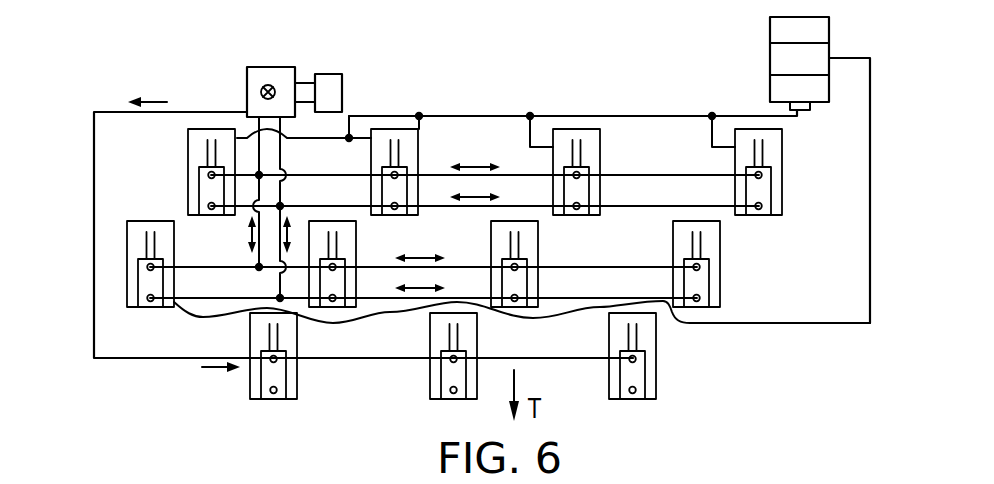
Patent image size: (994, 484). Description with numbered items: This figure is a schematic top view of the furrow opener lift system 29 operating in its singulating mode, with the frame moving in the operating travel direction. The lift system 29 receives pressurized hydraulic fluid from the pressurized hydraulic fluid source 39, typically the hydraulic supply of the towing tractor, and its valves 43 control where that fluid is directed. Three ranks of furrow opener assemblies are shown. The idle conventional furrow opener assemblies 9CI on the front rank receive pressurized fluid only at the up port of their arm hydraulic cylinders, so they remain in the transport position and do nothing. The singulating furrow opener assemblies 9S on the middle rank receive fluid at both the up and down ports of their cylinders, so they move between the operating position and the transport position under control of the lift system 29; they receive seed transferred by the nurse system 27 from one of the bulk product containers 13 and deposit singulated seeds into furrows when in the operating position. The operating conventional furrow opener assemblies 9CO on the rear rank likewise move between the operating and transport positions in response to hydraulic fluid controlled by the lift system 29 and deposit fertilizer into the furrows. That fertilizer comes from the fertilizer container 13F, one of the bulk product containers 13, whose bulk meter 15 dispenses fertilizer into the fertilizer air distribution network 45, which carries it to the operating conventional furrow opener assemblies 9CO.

The furrow opener lift system 29 is at (247, 78).
The valves 43 is at (261, 92).
The pressurized hydraulic fluid source 39 is at (342, 90).
The fertilizer air distribution network 45 is at (533, 113).
The bulk product container 13 is at (748, 61).
The fertilizer container 13F is at (770, 88).
The bulk meter 15 is at (807, 110).
The operating conventional furrow opener assemblies 9CO is at (782, 195).
The singulating furrow opener assemblies 9S is at (720, 281).
The idle conventional furrow opener assemblies 9CI is at (657, 390).
The nurse system 27 is at (821, 326).